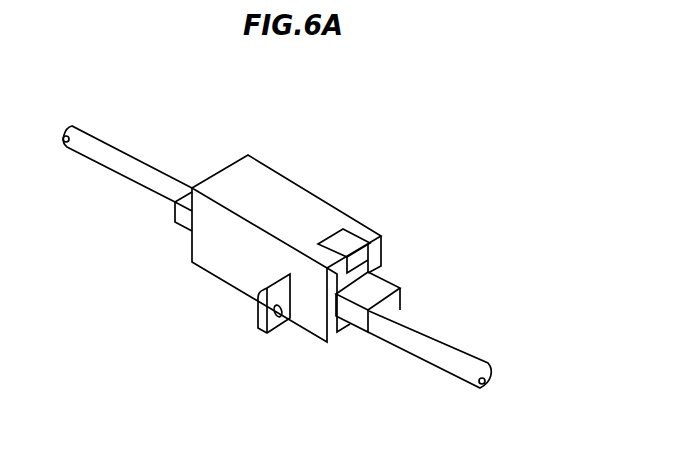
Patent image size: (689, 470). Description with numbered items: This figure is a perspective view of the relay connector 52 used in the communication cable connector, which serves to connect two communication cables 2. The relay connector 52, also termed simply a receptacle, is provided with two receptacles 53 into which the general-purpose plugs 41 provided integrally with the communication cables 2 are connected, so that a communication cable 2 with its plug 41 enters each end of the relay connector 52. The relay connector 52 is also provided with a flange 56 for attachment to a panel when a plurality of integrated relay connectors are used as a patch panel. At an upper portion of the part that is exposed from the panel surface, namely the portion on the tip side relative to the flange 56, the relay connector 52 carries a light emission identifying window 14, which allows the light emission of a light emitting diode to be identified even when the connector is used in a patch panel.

The communication cable 2 is at (117, 153).
The light emission identifying window 14 is at (350, 241).
The general-purpose plug 41 is at (183, 228).
The relay connector 52 is at (280, 185).
The receptacle 53 is at (338, 326).
The flange 56 is at (257, 314).